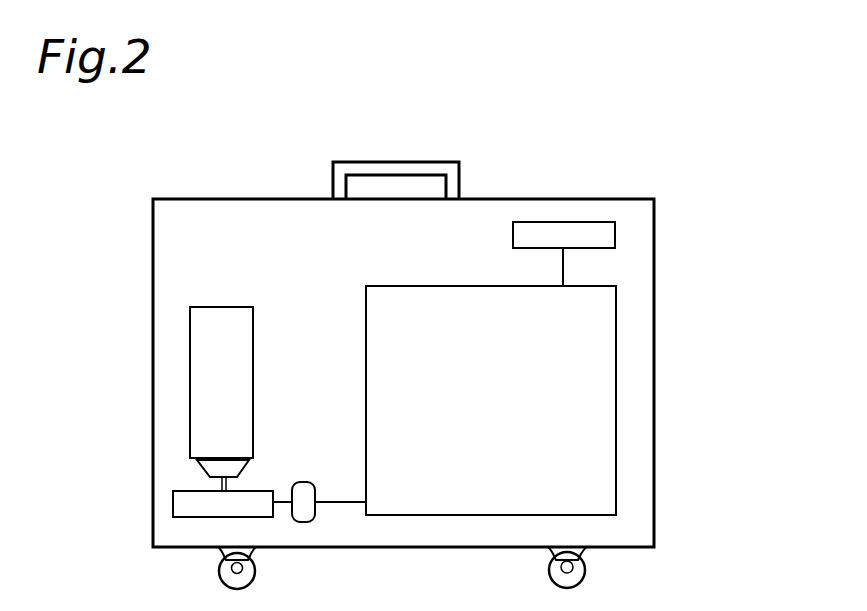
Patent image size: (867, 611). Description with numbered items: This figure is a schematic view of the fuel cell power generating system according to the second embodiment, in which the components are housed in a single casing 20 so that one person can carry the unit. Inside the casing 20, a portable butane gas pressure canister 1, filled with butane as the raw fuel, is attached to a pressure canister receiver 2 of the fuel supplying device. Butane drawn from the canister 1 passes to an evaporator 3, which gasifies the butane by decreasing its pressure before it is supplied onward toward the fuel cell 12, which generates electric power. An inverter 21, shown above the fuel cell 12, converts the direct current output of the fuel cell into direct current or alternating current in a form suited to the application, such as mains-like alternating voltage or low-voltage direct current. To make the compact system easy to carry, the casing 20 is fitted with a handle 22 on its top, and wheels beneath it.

The butane gas pressure canister 1 is at (253, 348).
The pressure canister receiver 2 is at (183, 517).
The evaporator 3 is at (303, 482).
The fuel cell 12 is at (384, 284).
The casing 20 is at (655, 347).
The inverter 21 is at (512, 235).
The handle 22 is at (436, 161).